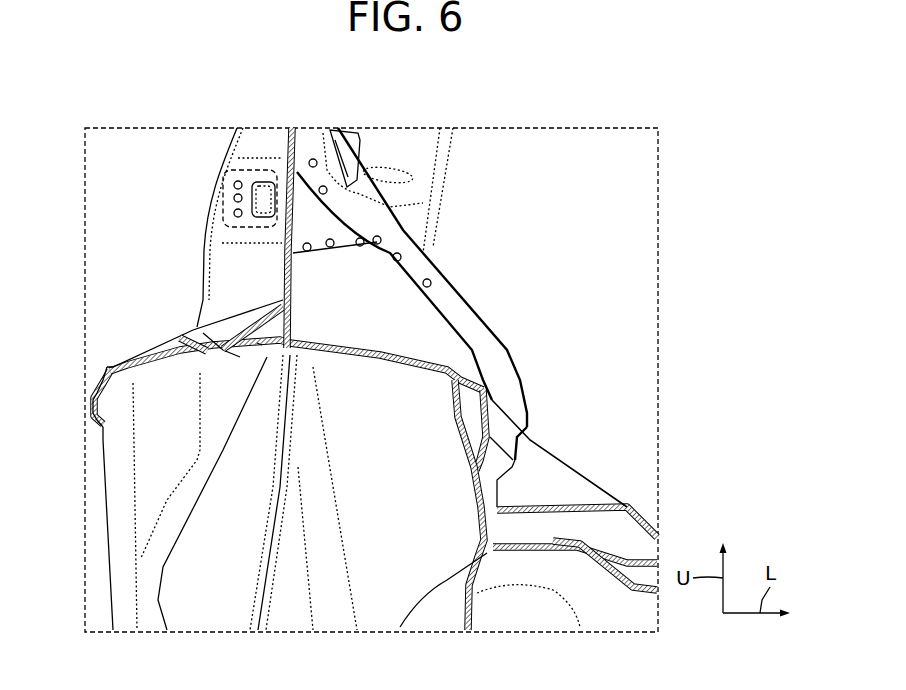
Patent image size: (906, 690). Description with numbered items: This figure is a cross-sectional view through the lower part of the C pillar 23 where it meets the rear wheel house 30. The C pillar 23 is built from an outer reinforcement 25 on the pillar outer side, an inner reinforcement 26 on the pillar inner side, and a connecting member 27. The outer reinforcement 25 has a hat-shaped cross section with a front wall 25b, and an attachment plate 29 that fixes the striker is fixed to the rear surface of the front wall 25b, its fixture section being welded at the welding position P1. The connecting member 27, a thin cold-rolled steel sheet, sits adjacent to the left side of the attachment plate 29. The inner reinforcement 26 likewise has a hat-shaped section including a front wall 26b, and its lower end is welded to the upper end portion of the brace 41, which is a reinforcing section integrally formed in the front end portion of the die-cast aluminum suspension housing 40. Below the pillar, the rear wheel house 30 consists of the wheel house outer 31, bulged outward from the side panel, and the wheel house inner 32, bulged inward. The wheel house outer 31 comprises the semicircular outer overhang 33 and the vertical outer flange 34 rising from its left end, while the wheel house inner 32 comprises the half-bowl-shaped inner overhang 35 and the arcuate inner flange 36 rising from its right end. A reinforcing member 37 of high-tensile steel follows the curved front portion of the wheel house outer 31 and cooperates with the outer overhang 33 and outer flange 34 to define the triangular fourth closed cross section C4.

The C pillar 23 is at (176, 146).
The outer reinforcement 25 is at (222, 141).
The front wall 25b is at (255, 142).
The welding position P1 is at (267, 188).
The attachment plate 29 is at (207, 213).
The connecting member 27 is at (339, 224).
The inner reinforcement 26 is at (477, 292).
The front wall 26b is at (490, 357).
The outer flange 34 is at (283, 283).
The inner flange 36 is at (300, 322).
The reinforcing member 37 is at (241, 314).
The outer overhang 33 is at (115, 370).
The wheel house outer 31 is at (92, 377).
The rear wheel house 30 is at (90, 432).
The fourth closed cross section C4 is at (257, 343).
The wheel house inner 32 is at (475, 405).
The inner overhang 35 is at (455, 418).
The brace 41 is at (580, 493).
The suspension housing 40 is at (575, 548).